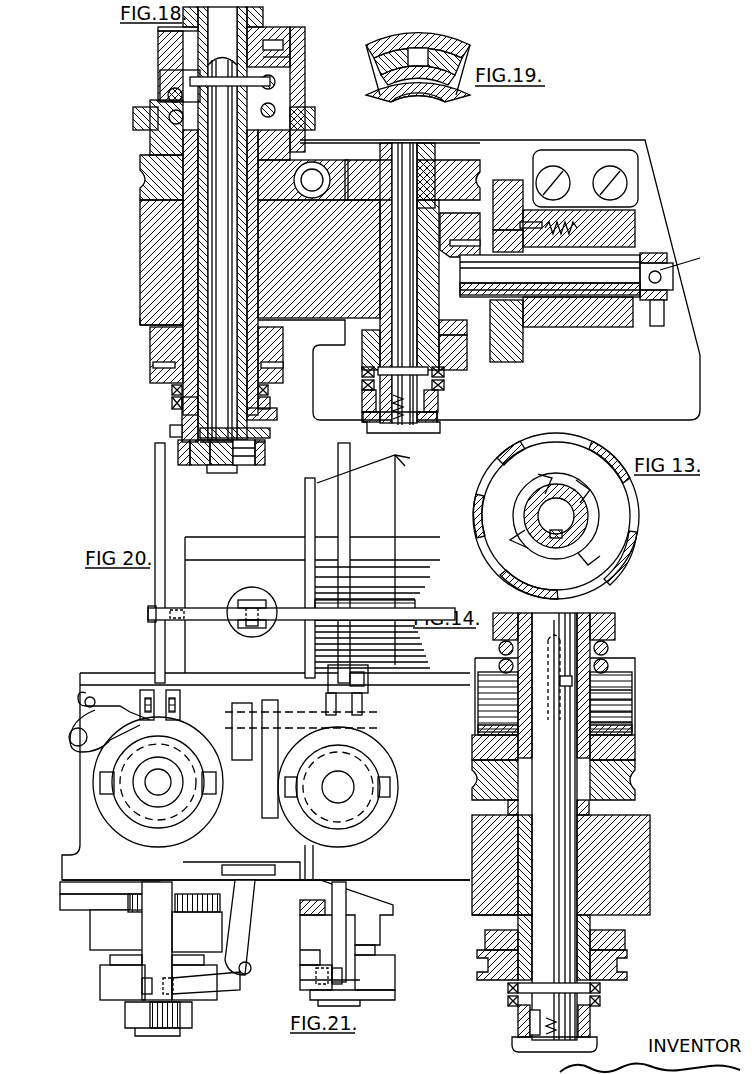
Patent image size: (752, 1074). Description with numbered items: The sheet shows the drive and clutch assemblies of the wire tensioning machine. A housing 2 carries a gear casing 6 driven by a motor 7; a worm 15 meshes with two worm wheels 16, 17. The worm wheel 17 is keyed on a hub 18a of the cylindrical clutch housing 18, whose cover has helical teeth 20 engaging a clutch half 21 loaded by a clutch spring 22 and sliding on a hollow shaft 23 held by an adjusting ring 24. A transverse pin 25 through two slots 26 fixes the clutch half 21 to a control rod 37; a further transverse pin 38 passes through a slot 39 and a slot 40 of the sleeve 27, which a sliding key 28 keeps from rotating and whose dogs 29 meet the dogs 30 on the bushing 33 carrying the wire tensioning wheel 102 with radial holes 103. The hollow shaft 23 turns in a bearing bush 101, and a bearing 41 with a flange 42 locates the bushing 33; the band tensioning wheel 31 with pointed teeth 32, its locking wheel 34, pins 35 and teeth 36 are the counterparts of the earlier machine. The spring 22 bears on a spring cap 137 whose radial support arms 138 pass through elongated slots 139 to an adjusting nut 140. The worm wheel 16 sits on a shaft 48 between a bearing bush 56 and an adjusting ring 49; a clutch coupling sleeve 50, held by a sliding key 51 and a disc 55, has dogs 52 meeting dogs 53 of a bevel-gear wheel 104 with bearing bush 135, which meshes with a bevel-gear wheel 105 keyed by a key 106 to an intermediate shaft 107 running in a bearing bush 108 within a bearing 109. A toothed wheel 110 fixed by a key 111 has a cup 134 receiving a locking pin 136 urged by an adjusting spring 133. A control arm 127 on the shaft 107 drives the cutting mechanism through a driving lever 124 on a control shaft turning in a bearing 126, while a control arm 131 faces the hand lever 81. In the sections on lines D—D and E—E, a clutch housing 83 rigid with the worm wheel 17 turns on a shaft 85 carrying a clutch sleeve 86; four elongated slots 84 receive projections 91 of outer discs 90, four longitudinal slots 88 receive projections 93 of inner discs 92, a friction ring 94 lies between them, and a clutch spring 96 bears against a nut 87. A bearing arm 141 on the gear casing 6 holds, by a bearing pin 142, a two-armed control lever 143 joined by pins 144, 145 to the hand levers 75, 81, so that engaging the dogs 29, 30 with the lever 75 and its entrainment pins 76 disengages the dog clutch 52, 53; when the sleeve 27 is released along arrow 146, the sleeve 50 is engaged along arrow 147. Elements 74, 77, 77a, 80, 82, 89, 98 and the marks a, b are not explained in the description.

In FIG. 18, the housing 2 is at (150, 248).
In FIG. 14, the housing 2 is at (480, 839).
In FIG. 20, the housing 2 is at (80, 845).
In FIG. 20, the gear casing 6 is at (255, 537).
In FIG. 21, the gear casing 6 is at (183, 868).
In FIG. 20, the motor 7 is at (363, 551).
In FIG. 18, the worm 15 is at (320, 165).
In FIG. 18, the worm wheel 16 is at (478, 162).
In FIG. 18, the worm wheel 17 is at (145, 180).
In FIG. 14, the worm wheel 17 is at (636, 780).
In FIG. 18, the clutch housing 18 is at (160, 45).
In FIG. 19, the clutch housing 18 is at (452, 42).
In FIG. 18, the hub 18a is at (195, 166).
In FIG. 18, the helical teeth 20 is at (283, 46).
In FIG. 18, the clutch half 21 is at (285, 60).
In FIG. 18, the clutch spring 22 is at (276, 80).
In FIG. 18, the hollow shaft 23 is at (255, 14).
In FIG. 18, the adjusting ring 24 is at (275, 35).
In FIG. 18, the transverse pin 25 is at (165, 75).
In FIG. 18, the slots 26 is at (190, 81).
In FIG. 18, the sleeve 27 is at (170, 432).
In FIG. 14, the sleeve 27 is at (518, 1020).
In FIG. 20, the sleeve 27 is at (138, 815).
In FIG. 21, the sleeve 27 is at (100, 970).
In FIG. 18, the sliding key 28 is at (186, 466).
In FIG. 14, the sliding key 28 is at (532, 1032).
In FIG. 18, the dogs 29 is at (270, 401).
In FIG. 14, the dogs 29 is at (602, 1003).
In FIG. 21, the dogs 29 is at (110, 960).
In FIG. 18, the dogs 30 is at (270, 388).
In FIG. 14, the dogs 30 is at (602, 990).
In FIG. 14, the tensioning wheel 31 is at (615, 965).
In FIG. 14, the pointed teeth 32 is at (480, 957).
In FIG. 18, the bushing 33 is at (175, 357).
In FIG. 14, the bushing 33 is at (554, 947).
In FIG. 14, the locking wheel 34 is at (495, 932).
In FIG. 14, the pins 35 is at (508, 986).
In FIG. 18, the teeth 36 is at (150, 335).
In FIG. 14, the teeth 36 is at (487, 940).
In FIG. 18, the control rod 37 is at (158, 29).
In FIG. 18, the transverse pin 38 is at (212, 474).
In FIG. 18, the slot 39 is at (230, 432).
In FIG. 18, the slot 40 is at (258, 455).
In FIG. 14, the bearing 41 is at (520, 866).
In FIG. 14, the flange 42 is at (508, 808).
In FIG. 18, the shaft 48 is at (397, 152).
In FIG. 18, the adjusting ring 49 is at (428, 150).
In FIG. 18, the clutch coupling sleeve 50 is at (430, 425).
In FIG. 20, the clutch coupling sleeve 50 is at (372, 805).
In FIG. 21, the clutch coupling sleeve 50 is at (390, 955).
In FIG. 18, the sliding key 51 is at (362, 398).
In FIG. 18, the dogs 52 is at (446, 386).
In FIG. 21, the dogs 52 is at (378, 946).
In FIG. 18, the dogs 53 is at (446, 372).
In FIG. 18, the disc 55 is at (344, 427).
In FIG. 18, the bearing bush 56 is at (380, 262).
In FIG. 20, the bearing block 74 is at (180, 705).
In FIG. 20, the hand lever 75 is at (156, 520).
In FIG. 21, the hand lever 75 is at (156, 960).
In FIG. 20, the entrainment pins 76 is at (112, 800).
In FIG. 18, the spacer 77 is at (180, 418).
In FIG. 18, the spacer 77a is at (440, 405).
In FIG. 20, the clamp 80 is at (330, 685).
In FIG. 20, the hand lever 81 is at (340, 457).
In FIG. 21, the hand lever 81 is at (340, 952).
In FIG. 20, the pulley 82 is at (392, 780).
In FIG. 14, the clutch housing 83 is at (637, 752).
In FIG. 13, the elongated slots 84 is at (525, 455).
In FIG. 14, the elongated slots 84 is at (637, 660).
In FIG. 13, the shaft 85 is at (520, 612).
In FIG. 13, the clutch sleeve 86 is at (590, 613).
In FIG. 14, the nut 87 is at (615, 618).
In FIG. 13, the longitudinal slots 88 is at (515, 535).
In FIG. 14, the longitudinal slots 88 is at (510, 648).
In FIG. 14, the slot 89 is at (552, 722).
In FIG. 13, the outer discs 90 is at (612, 505).
In FIG. 14, the outer discs 90 is at (571, 686).
In FIG. 13, the projections 91 is at (512, 470).
In FIG. 14, the projections 91 is at (632, 680).
In FIG. 13, the inner discs 92 is at (612, 527).
In FIG. 14, the inner discs 92 is at (632, 718).
In FIG. 13, the projections 93 is at (585, 545).
In FIG. 14, the projections 93 is at (580, 718).
In FIG. 14, the friction ring 94 is at (632, 700).
In FIG. 14, the clutch spring 96 is at (610, 645).
In FIG. 14, the end cap 98 is at (598, 1044).
In FIG. 18, the bearing bush 101 is at (190, 293).
In FIG. 18, the wire tensioning wheel 102 is at (270, 352).
In FIG. 21, the wire tensioning wheel 102 is at (95, 938).
In FIG. 18, the radial holes 103 is at (153, 366).
In FIG. 18, the bevel-gear wheel 104 is at (450, 355).
In FIG. 21, the bevel-gear wheel 104 is at (380, 920).
In FIG. 18, the bevel-gear wheel 105 is at (450, 330).
In FIG. 18, the key 106 is at (500, 278).
In FIG. 18, the intermediate shaft 107 is at (689, 254).
In FIG. 18, the bearing bush 108 is at (650, 255).
In FIG. 18, the bearing 109 is at (634, 223).
In FIG. 18, the toothed wheel 110 is at (515, 360).
In FIG. 18, the key 111 is at (486, 246).
In FIG. 20, the driving lever 124 is at (268, 818).
In FIG. 20, the bearing 126 is at (242, 760).
In FIG. 18, the control arm 127 is at (656, 310).
In FIG. 20, the control arm 131 is at (364, 705).
In FIG. 18, the adjusting spring 133 is at (572, 234).
In FIG. 18, the cup 134 is at (515, 180).
In FIG. 18, the bearing bush 135 is at (372, 348).
In FIG. 18, the locking pin 136 is at (535, 232).
In FIG. 18, the spring cap 137 is at (158, 148).
In FIG. 19, the spring cap 137 is at (421, 94).
In FIG. 18, the radial support arms 138 is at (315, 114).
In FIG. 19, the radial support arms 138 is at (418, 45).
In FIG. 18, the elongated slot 139 is at (276, 108).
In FIG. 19, the elongated slot 139 is at (418, 83).
In FIG. 18, the adjusting nut 140 is at (150, 130).
In FIG. 19, the adjusting nut 140 is at (386, 40).
In FIG. 20, the bearing arm 141 is at (262, 590).
In FIG. 21, the bearing arm 141 is at (245, 880).
In FIG. 20, the bearing pin 142 is at (262, 626).
In FIG. 21, the bearing pin 142 is at (250, 978).
In FIG. 20, the control lever 143 is at (212, 620).
In FIG. 21, the control lever 143 is at (222, 990).
In FIG. 20, the pin 144 is at (150, 608).
In FIG. 21, the pin 144 is at (142, 988).
In FIG. 20, the pin 145 is at (372, 617).
In FIG. 21, the pin 145 is at (345, 975).
In FIG. 21, the arrow 146 is at (120, 1005).
In FIG. 21, the arrow 147 is at (395, 1000).
In FIG. 18, the face a is at (238, 441).
In FIG. 18, the face b is at (267, 473).
In FIG. 14, the section line D— D is at (478, 690).
In FIG. 14, the section line E— E is at (478, 740).